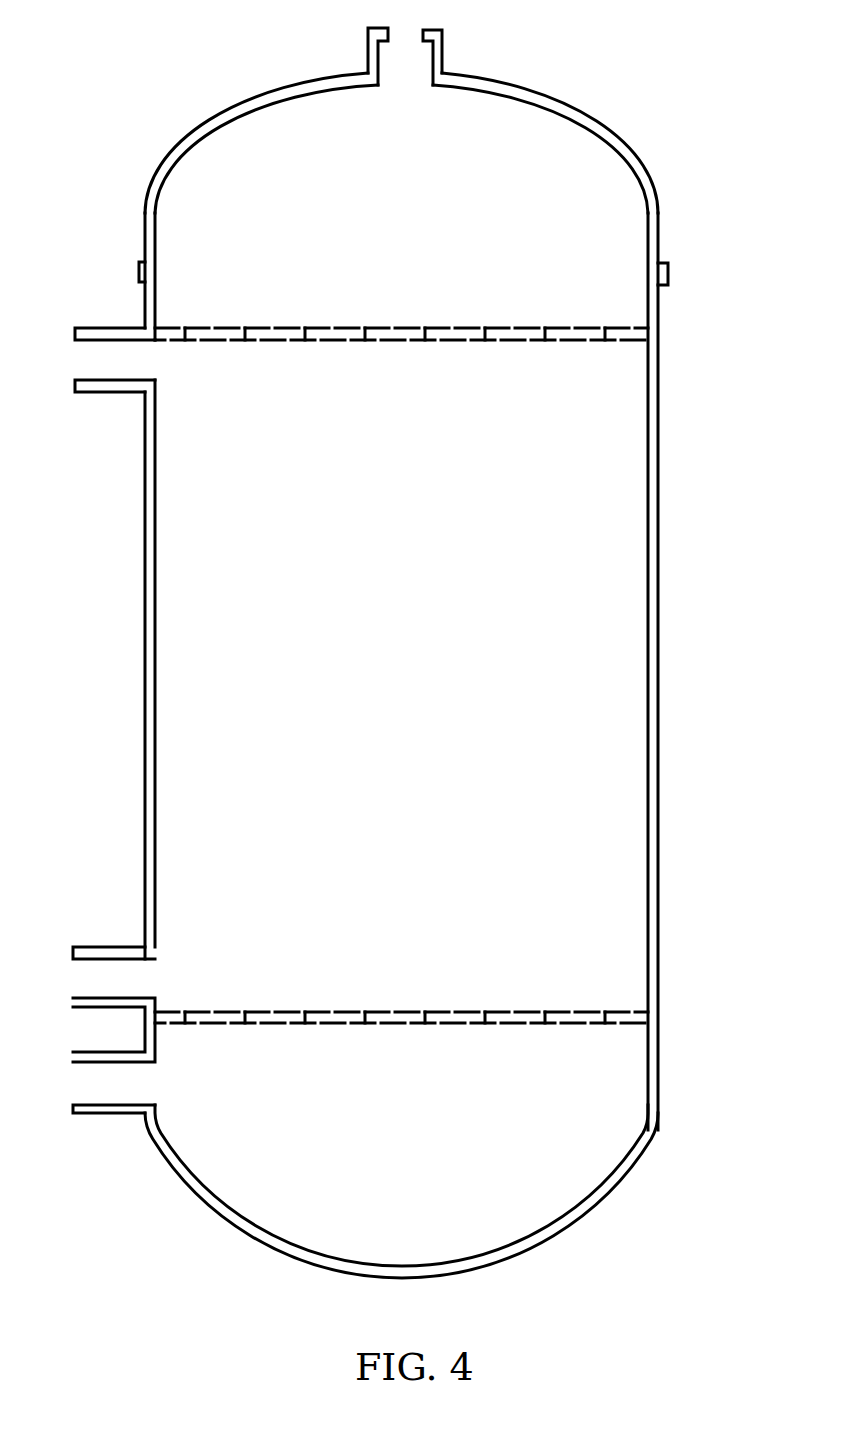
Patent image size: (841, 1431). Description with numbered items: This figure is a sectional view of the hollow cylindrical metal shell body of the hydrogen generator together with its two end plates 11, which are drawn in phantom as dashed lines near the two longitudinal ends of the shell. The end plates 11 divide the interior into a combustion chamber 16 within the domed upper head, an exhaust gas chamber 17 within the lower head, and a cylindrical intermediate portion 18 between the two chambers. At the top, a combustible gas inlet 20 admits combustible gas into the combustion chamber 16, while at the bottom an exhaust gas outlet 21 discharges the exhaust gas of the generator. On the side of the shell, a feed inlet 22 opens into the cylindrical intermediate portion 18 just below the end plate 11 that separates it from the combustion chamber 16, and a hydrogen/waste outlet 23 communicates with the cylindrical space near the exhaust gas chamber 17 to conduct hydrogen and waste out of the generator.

The end plate 11 is at (618, 327).
The combustion chamber 16 is at (545, 132).
The exhaust gas chamber 17 is at (499, 1216).
The cylindrical intermediate portion 18 is at (594, 582).
The combustible gas inlet 20 is at (445, 31).
The exhaust gas outlet 21 is at (124, 1120).
The feed inlet 22 is at (133, 313).
The hydrogen/waste outlet 23 is at (124, 930).